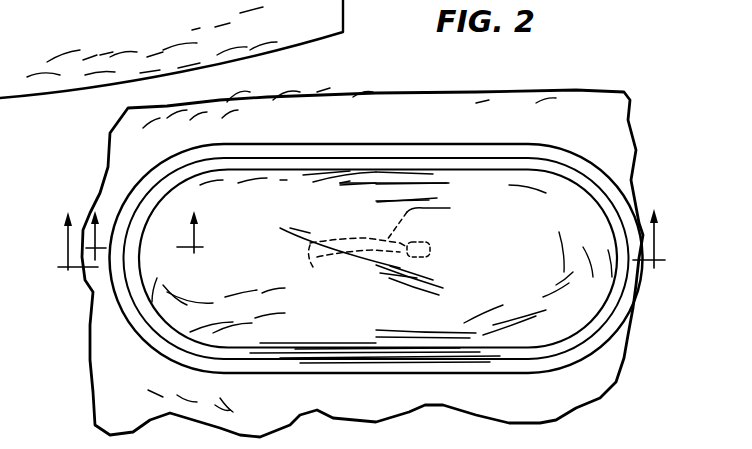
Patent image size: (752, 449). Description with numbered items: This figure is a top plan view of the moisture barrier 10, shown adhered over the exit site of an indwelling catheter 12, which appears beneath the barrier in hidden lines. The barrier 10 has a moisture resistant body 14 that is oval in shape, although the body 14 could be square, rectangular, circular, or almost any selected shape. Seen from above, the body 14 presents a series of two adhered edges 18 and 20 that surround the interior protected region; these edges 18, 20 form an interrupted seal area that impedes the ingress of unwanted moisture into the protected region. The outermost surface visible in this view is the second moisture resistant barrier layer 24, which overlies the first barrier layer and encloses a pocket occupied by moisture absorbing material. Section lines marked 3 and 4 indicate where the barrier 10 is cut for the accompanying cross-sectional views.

The moisture barrier 10 is at (565, 133).
The indwelling catheter 12 is at (437, 198).
The moisture resistant body 14 is at (368, 132).
The adhered edge 18 is at (138, 275).
The adhered edge 20 is at (138, 322).
The second moisture resistant barrier layer 24 is at (501, 180).
The section line 3- 3 is at (355, 254).
The section line 4- 4 is at (142, 222).